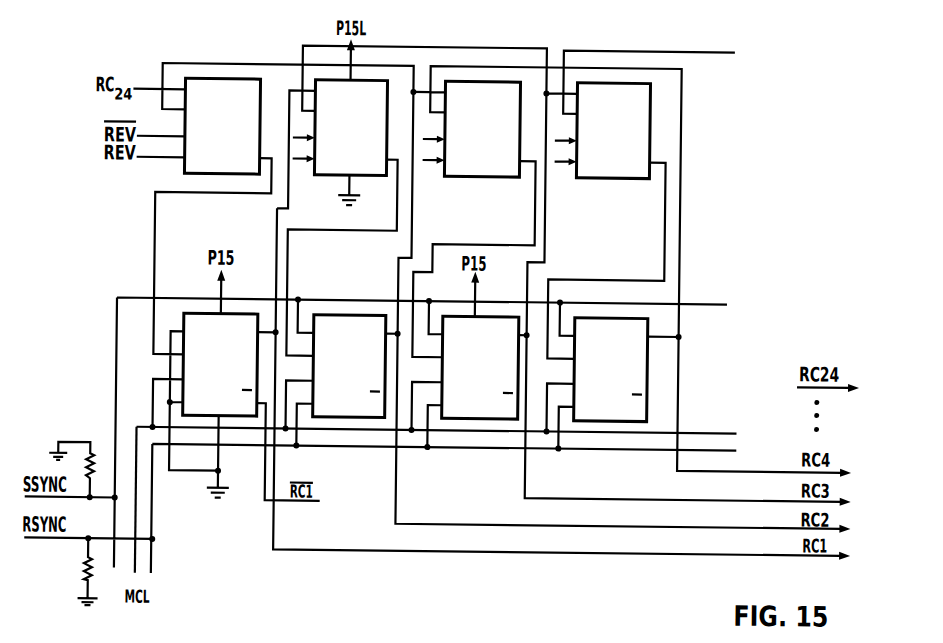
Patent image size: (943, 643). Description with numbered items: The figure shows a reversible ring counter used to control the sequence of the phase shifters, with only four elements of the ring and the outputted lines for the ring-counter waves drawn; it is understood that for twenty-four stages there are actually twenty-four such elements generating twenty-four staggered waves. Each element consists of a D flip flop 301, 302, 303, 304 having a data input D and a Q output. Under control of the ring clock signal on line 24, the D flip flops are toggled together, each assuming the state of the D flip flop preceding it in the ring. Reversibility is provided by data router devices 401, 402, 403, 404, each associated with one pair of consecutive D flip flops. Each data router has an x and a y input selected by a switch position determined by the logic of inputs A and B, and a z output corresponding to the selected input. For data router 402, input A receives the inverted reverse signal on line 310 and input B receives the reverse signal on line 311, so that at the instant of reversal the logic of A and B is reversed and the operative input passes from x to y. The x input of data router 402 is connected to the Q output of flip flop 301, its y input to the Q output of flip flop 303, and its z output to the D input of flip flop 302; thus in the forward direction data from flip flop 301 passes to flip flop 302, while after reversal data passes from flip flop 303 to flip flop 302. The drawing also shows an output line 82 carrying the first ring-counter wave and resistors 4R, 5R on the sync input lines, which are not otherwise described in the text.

The data router device 401 is at (217, 81).
The data router device 402 is at (364, 177).
The data router device 403 is at (488, 179).
The data router device 404 is at (606, 178).
The line 310 is at (291, 139).
The line 311 is at (291, 160).
The D flip flop 301 is at (203, 316).
The D flip flop 302 is at (366, 316).
The D flip flop 303 is at (489, 316).
The D flip flop 304 is at (592, 316).
The RC1 output line from flip-flop 301 82 is at (276, 529).
The line 24 is at (140, 555).
The resistor 4R is at (95, 464).
The resistor 5R is at (84, 577).